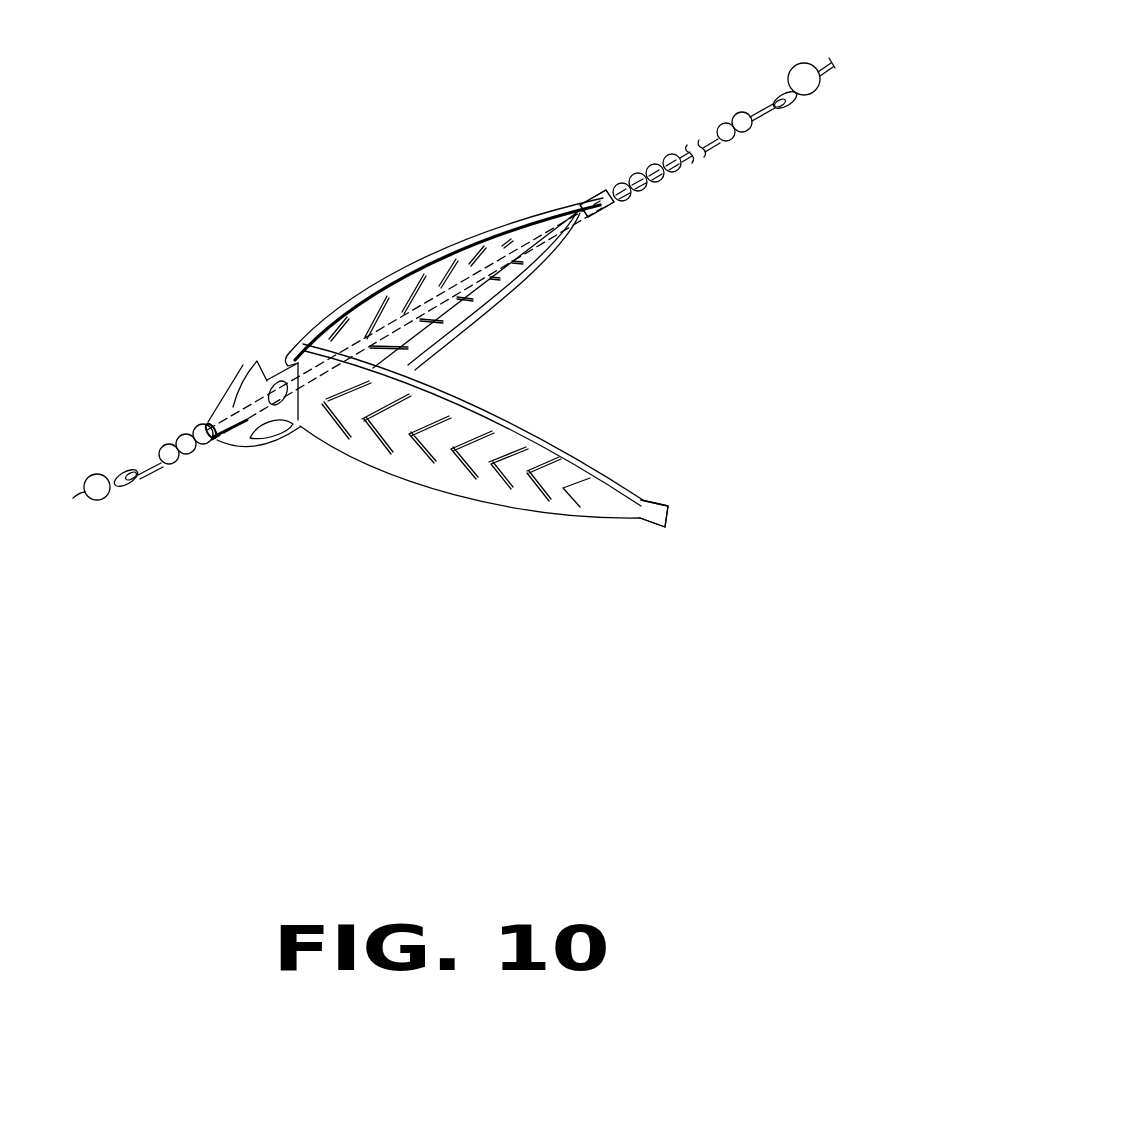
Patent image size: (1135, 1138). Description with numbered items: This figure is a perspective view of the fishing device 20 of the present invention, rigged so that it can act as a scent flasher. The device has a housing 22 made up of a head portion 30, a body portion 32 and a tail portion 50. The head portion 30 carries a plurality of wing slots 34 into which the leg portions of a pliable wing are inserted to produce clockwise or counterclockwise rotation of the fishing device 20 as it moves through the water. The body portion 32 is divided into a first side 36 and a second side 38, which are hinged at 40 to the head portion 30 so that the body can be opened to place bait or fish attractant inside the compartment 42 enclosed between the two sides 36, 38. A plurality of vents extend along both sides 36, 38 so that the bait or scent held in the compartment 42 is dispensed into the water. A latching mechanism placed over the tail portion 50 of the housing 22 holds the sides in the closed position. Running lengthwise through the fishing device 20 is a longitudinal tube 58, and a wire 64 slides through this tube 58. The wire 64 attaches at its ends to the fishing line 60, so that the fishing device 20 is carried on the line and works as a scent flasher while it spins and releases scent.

The fishing device 20 is at (410, 166).
The housing 22 is at (410, 282).
The head portion 30 is at (229, 401).
The body portion 32 is at (410, 302).
The wing slots 34 is at (255, 360).
The first side 36 is at (463, 245).
The second side 38 is at (483, 464).
The hinge 40 is at (321, 438).
The compartment 42 is at (490, 288).
The tail portion 50 is at (596, 198).
The longitudinal tube 58 is at (550, 233).
The fishing line 60 is at (822, 63).
The wire 64 is at (145, 459).